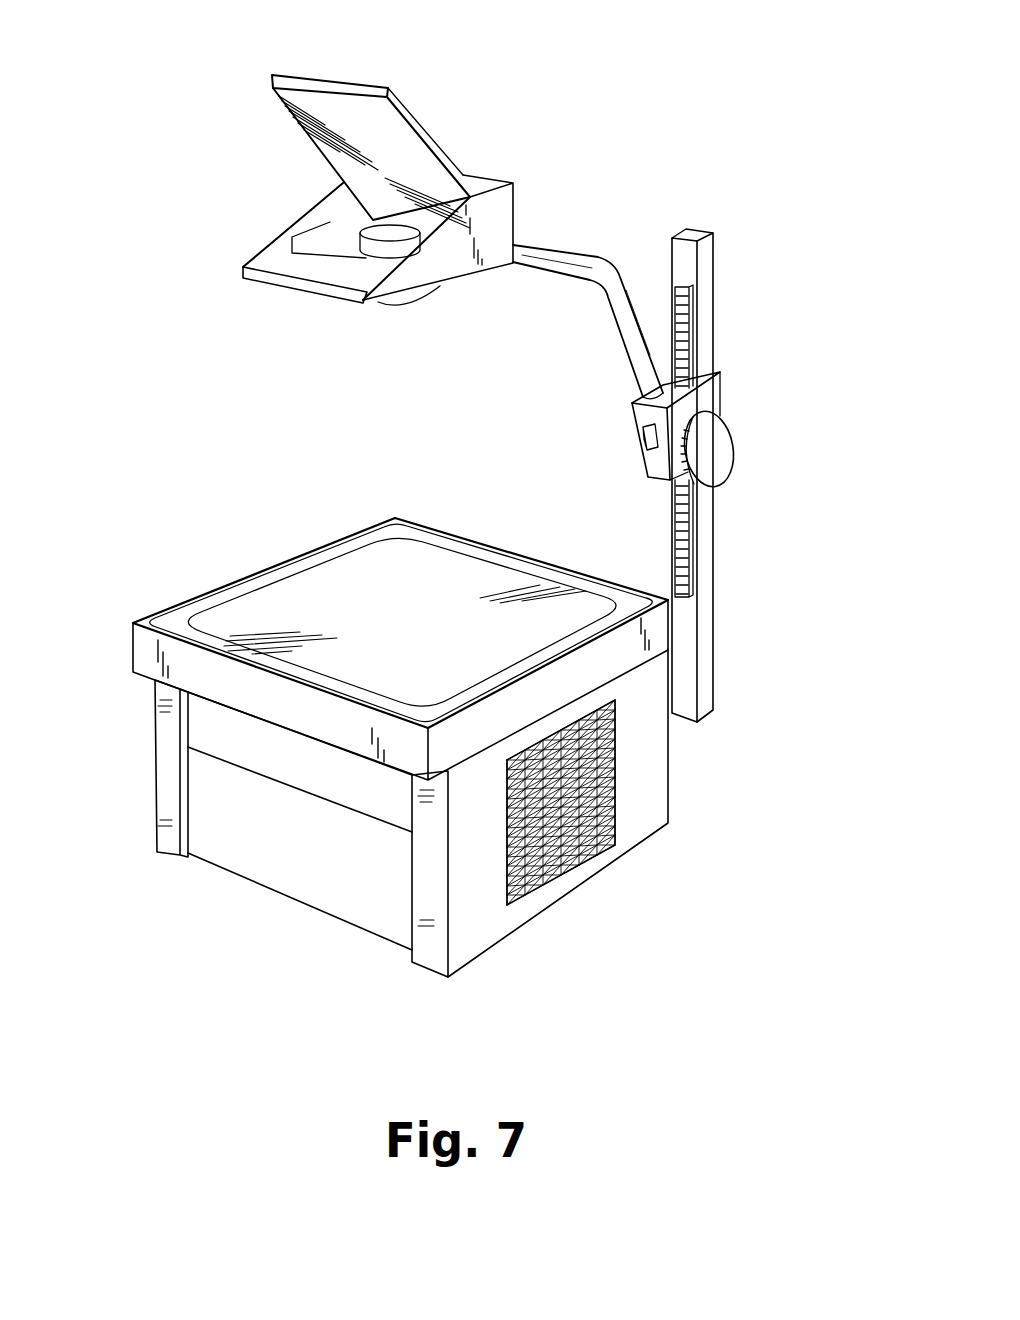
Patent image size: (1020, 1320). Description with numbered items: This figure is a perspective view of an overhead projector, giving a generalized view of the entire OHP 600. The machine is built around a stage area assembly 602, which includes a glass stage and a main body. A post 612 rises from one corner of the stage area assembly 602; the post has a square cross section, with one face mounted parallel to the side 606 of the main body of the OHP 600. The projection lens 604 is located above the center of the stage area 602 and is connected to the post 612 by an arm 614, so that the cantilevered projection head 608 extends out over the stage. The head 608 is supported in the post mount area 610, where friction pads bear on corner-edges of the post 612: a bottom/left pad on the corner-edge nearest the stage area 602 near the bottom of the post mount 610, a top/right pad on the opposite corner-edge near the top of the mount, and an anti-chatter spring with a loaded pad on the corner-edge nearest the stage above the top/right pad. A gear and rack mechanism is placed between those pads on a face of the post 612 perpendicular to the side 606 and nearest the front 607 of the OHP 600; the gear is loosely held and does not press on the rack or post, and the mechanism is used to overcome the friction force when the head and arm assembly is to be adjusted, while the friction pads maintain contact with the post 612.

The overhead projector 600 is at (459, 767).
The stage area assembly 602 is at (429, 581).
The projection lens 604 is at (273, 233).
The side of the main body 606 is at (636, 770).
The front of the OHP 607 is at (284, 842).
The cantilevered projection head 608 is at (450, 133).
The post mount area 610 is at (731, 356).
The post 612 is at (724, 545).
The arm 614 is at (600, 253).